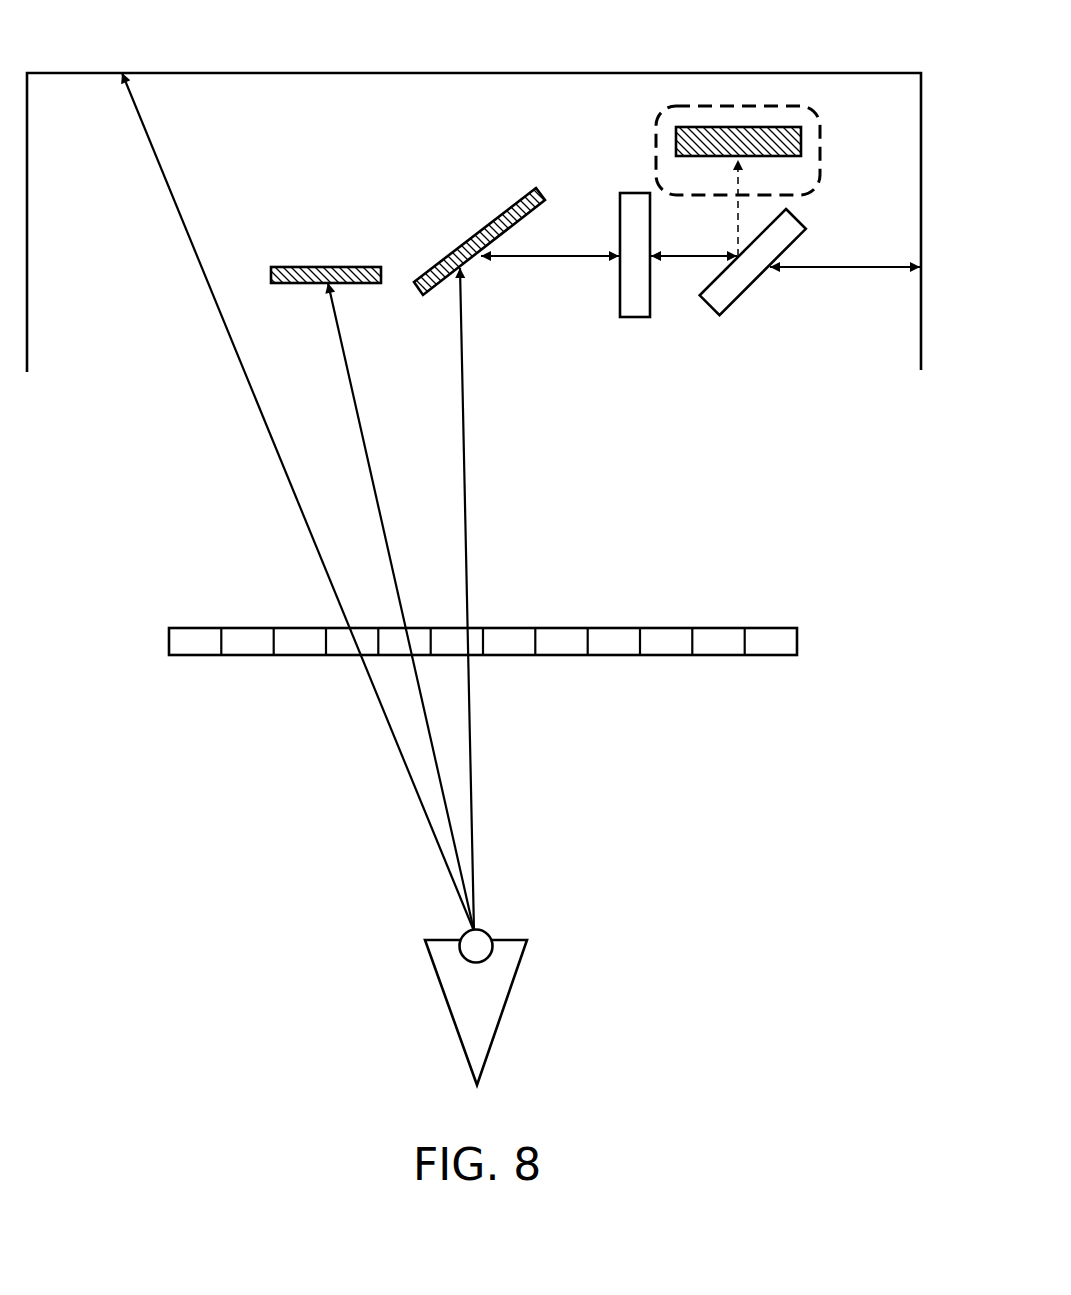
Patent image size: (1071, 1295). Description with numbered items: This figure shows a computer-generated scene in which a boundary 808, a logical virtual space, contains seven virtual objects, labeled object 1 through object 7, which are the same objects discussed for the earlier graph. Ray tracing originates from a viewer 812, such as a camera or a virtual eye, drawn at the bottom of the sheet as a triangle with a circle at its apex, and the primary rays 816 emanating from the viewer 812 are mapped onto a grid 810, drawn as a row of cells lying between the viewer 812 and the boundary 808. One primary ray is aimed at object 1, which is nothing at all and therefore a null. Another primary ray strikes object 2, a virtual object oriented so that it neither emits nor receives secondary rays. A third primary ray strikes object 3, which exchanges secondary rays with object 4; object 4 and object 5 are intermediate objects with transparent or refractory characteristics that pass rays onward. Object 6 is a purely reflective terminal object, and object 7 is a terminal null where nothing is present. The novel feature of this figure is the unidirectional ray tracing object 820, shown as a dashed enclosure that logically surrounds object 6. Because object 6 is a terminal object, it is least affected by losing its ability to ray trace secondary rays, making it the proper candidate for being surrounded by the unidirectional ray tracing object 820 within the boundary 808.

The object 1 is at (166, 109).
The object 2 is at (333, 258).
The object 3 is at (498, 300).
The object 4 is at (607, 244).
The object 5 is at (729, 249).
The object 6 is at (776, 188).
The object 7 is at (899, 313).
The boundary 808 is at (818, 73).
The grid 810 is at (154, 630).
The viewer 812 is at (511, 996).
The primary rays 816 is at (260, 496).
The unidirectional ray tracing object 820 is at (821, 141).